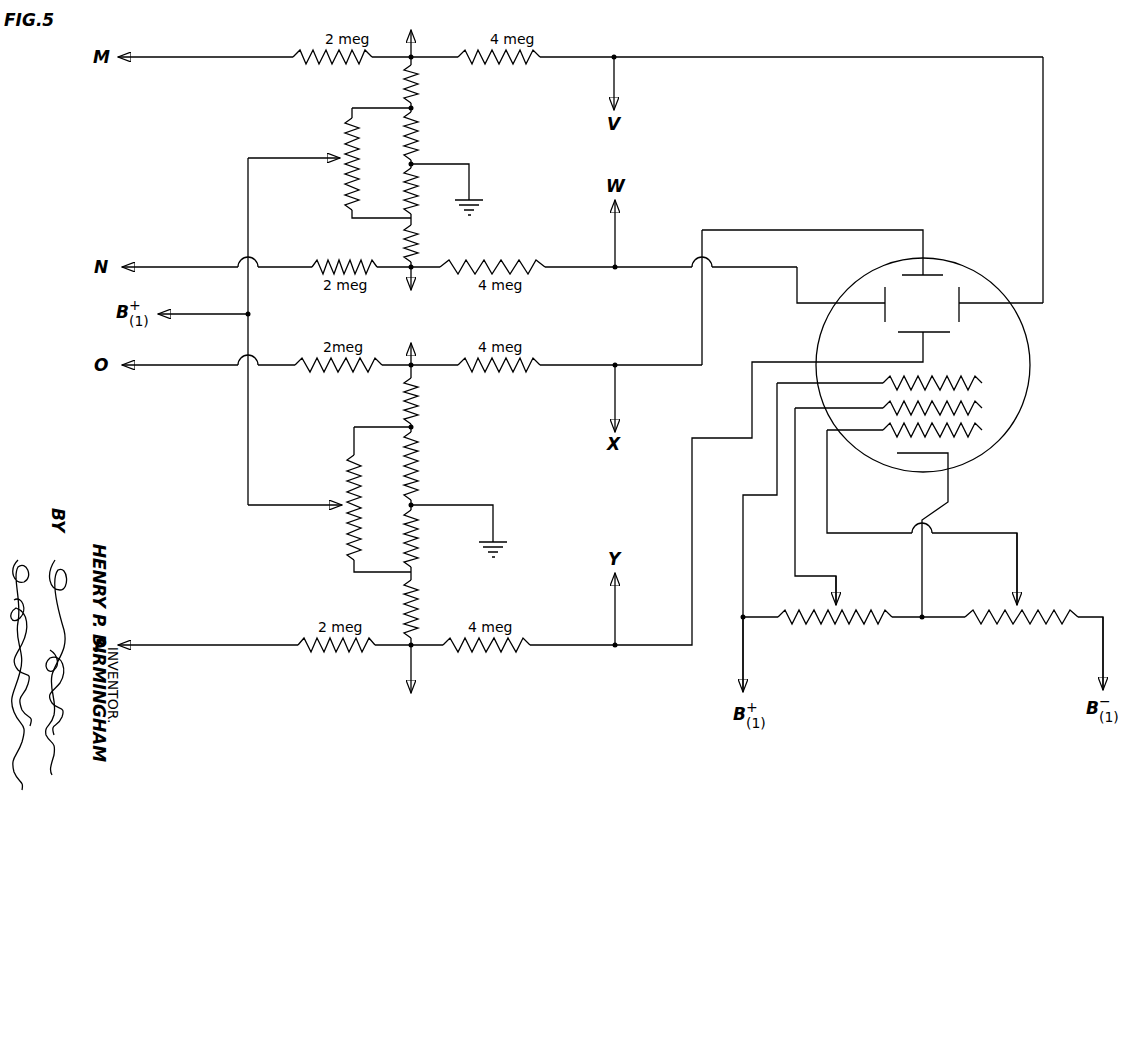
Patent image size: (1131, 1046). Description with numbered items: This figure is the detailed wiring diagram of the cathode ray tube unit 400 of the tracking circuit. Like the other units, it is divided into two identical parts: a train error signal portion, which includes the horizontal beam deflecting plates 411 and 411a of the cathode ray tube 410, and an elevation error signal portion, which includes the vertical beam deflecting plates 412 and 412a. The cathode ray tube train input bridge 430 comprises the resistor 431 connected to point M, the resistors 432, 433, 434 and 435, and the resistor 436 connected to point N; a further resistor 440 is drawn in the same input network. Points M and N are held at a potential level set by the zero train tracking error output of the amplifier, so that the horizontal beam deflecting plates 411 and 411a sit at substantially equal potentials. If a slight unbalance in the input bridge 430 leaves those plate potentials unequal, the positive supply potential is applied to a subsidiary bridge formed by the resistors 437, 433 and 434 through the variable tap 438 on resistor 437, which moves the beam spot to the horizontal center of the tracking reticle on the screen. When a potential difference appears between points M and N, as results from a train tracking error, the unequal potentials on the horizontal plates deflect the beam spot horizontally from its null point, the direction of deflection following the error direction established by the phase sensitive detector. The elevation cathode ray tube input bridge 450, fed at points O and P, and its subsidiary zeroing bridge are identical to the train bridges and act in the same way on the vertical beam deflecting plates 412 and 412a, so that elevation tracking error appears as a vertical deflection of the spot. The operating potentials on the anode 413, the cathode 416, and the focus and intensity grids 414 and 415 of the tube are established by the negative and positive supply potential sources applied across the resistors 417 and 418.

The cathode ray tube unit 400 is at (768, 12).
The cathode ray tube 410 is at (1035, 386).
The horizontal beam deflecting plate 411 is at (878, 293).
The horizontal beam deflecting plate 411a is at (968, 296).
The vertical beam deflecting plate 412 is at (931, 274).
The vertical beam deflecting plate 412a is at (936, 332).
The anode 413 is at (980, 386).
The focus grid 414 is at (974, 409).
The intensity grid 415 is at (972, 433).
The cathode 416 is at (946, 457).
The resistor 417 is at (1040, 619).
The resistor 418 is at (812, 619).
The cathode ray tube train input bridge 430 is at (317, 154).
The resistor 431 is at (304, 48).
The resistor 432 is at (416, 90).
The resistor 433 is at (418, 132).
The resistor 434 is at (416, 206).
The resistor 435 is at (406, 235).
The resistor 436 is at (348, 261).
The resistor 437 is at (352, 152).
The variable tap 438 is at (338, 165).
The resistor 4 meg 440 is at (523, 50).
The elevation cathode ray tube input bridge 450 is at (300, 568).